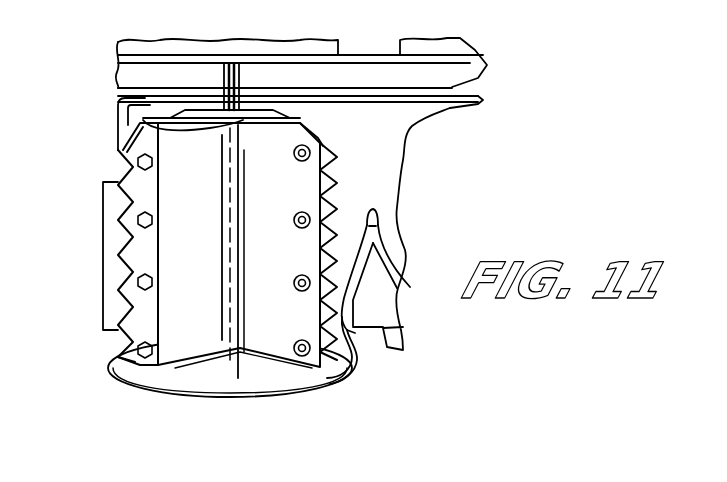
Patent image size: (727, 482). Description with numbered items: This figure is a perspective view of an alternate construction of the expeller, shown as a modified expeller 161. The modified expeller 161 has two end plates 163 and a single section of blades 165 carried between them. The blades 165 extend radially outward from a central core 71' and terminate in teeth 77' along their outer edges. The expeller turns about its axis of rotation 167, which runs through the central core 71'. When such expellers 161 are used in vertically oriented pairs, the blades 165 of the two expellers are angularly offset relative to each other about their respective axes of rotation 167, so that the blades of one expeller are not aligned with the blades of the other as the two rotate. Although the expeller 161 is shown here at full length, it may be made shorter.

The modified expeller 161 is at (231, 405).
The end plates 163 is at (143, 127).
The blades 165 is at (202, 270).
The axis of rotation 167 is at (153, 385).
The central core 71' is at (209, 251).
The teeth 77' is at (85, 256).